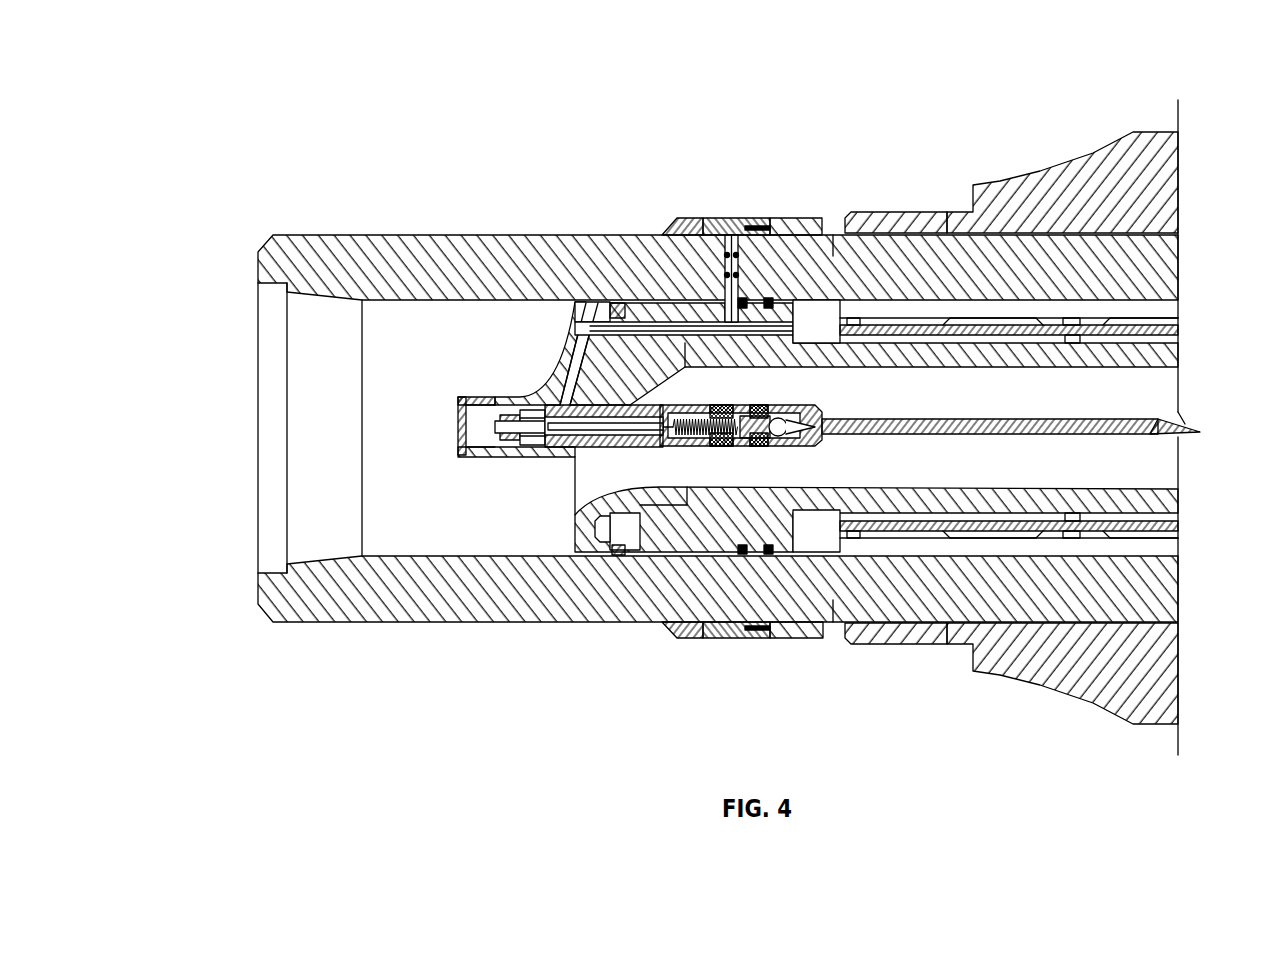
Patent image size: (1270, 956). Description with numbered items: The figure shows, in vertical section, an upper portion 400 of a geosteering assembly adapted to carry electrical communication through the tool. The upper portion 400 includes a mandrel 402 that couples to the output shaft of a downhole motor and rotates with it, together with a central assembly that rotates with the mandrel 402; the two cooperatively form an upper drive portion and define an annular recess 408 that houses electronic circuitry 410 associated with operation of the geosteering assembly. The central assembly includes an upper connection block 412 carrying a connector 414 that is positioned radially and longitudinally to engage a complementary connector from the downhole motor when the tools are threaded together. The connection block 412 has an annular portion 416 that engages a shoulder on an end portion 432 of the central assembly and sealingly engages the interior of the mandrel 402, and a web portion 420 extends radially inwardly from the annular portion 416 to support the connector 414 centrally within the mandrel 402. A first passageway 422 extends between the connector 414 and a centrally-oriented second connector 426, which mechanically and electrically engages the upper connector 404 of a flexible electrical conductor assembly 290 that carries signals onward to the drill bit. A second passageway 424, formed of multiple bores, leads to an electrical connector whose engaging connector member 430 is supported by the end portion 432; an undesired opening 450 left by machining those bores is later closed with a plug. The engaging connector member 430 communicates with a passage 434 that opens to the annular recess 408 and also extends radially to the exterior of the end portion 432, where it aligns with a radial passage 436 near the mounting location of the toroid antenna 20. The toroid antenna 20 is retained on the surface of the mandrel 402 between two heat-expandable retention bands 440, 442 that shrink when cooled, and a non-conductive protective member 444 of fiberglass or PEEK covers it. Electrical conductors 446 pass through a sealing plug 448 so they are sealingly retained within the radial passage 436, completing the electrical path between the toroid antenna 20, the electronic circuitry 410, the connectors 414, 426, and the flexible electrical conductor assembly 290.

The upper portion of geosteering assembly 400 is at (286, 121).
The mandrel 402 is at (366, 234).
The upper connector 404 is at (814, 448).
The annular recess 408 is at (912, 318).
The electronic circuitry 410 is at (985, 530).
The upper connection block 412 is at (568, 540).
The connector 414 is at (512, 386).
The annular portion 416 is at (616, 557).
The web portion 420 is at (676, 290).
The first passageway 422 is at (572, 450).
The second passageway 424 is at (566, 372).
The second connector 426 is at (669, 232).
The engaging connector member 430 is at (722, 336).
The end portion 432 is at (640, 504).
The passage 434 is at (850, 230).
The radial passage 436 is at (790, 230).
The retention band 440 is at (810, 640).
The retention band 442 is at (673, 640).
The non-conductive protective member 444 is at (738, 640).
The electrical conductors 446 is at (768, 312).
The sealing plug 448 is at (733, 222).
The undesired opening 450 is at (617, 302).
The toroid antenna 20 is at (772, 640).
The flexible electrical conductor assembly 290 is at (950, 438).